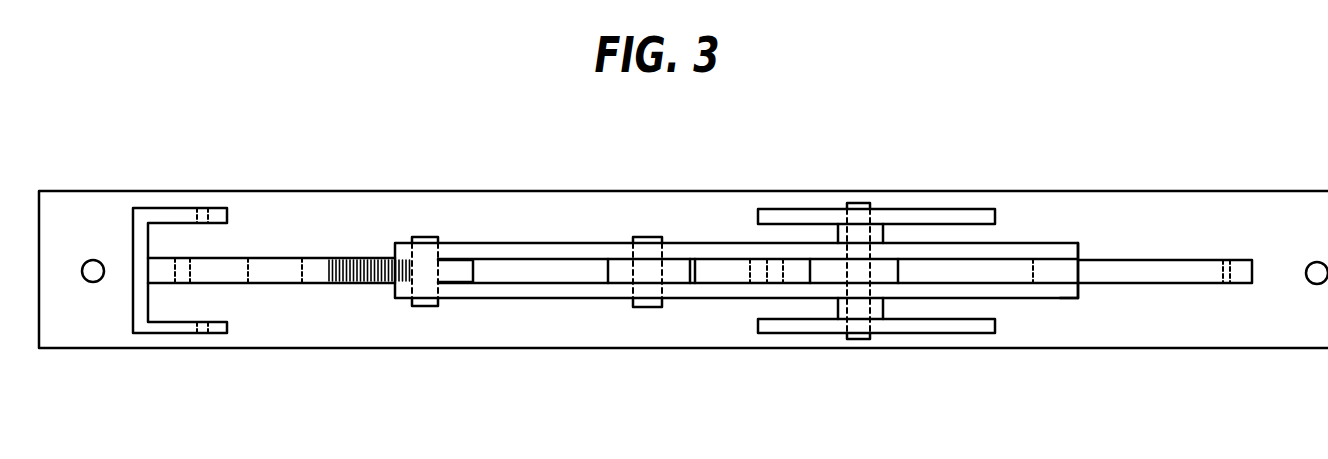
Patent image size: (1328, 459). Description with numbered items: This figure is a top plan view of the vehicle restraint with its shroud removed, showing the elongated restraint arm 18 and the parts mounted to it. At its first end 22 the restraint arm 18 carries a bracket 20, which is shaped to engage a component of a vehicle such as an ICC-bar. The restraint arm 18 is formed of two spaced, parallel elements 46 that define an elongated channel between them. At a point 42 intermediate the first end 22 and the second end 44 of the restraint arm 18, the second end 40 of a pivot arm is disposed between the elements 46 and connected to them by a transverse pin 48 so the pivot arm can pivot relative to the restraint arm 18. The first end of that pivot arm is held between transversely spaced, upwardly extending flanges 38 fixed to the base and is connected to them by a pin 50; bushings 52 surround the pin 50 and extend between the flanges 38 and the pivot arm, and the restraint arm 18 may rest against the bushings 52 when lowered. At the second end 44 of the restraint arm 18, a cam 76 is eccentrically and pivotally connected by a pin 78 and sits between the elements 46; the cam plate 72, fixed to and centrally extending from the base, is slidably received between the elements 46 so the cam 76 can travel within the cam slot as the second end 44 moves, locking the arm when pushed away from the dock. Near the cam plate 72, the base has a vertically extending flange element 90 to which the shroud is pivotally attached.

The restraint arm 18 is at (1057, 247).
The bracket 20 is at (1153, 265).
The first end 22 is at (1080, 288).
The flanges 38 is at (930, 214).
The second end 40 is at (620, 290).
The point 42 is at (642, 237).
The second end 44 is at (400, 247).
The elements 46 is at (542, 248).
The transverse pin 48 is at (663, 305).
The pin 50 is at (855, 203).
The bushings 52 is at (883, 232).
The cam plate 72 is at (287, 257).
The cam 76 is at (443, 267).
The pin 78 is at (428, 236).
The flange element 90 is at (167, 216).